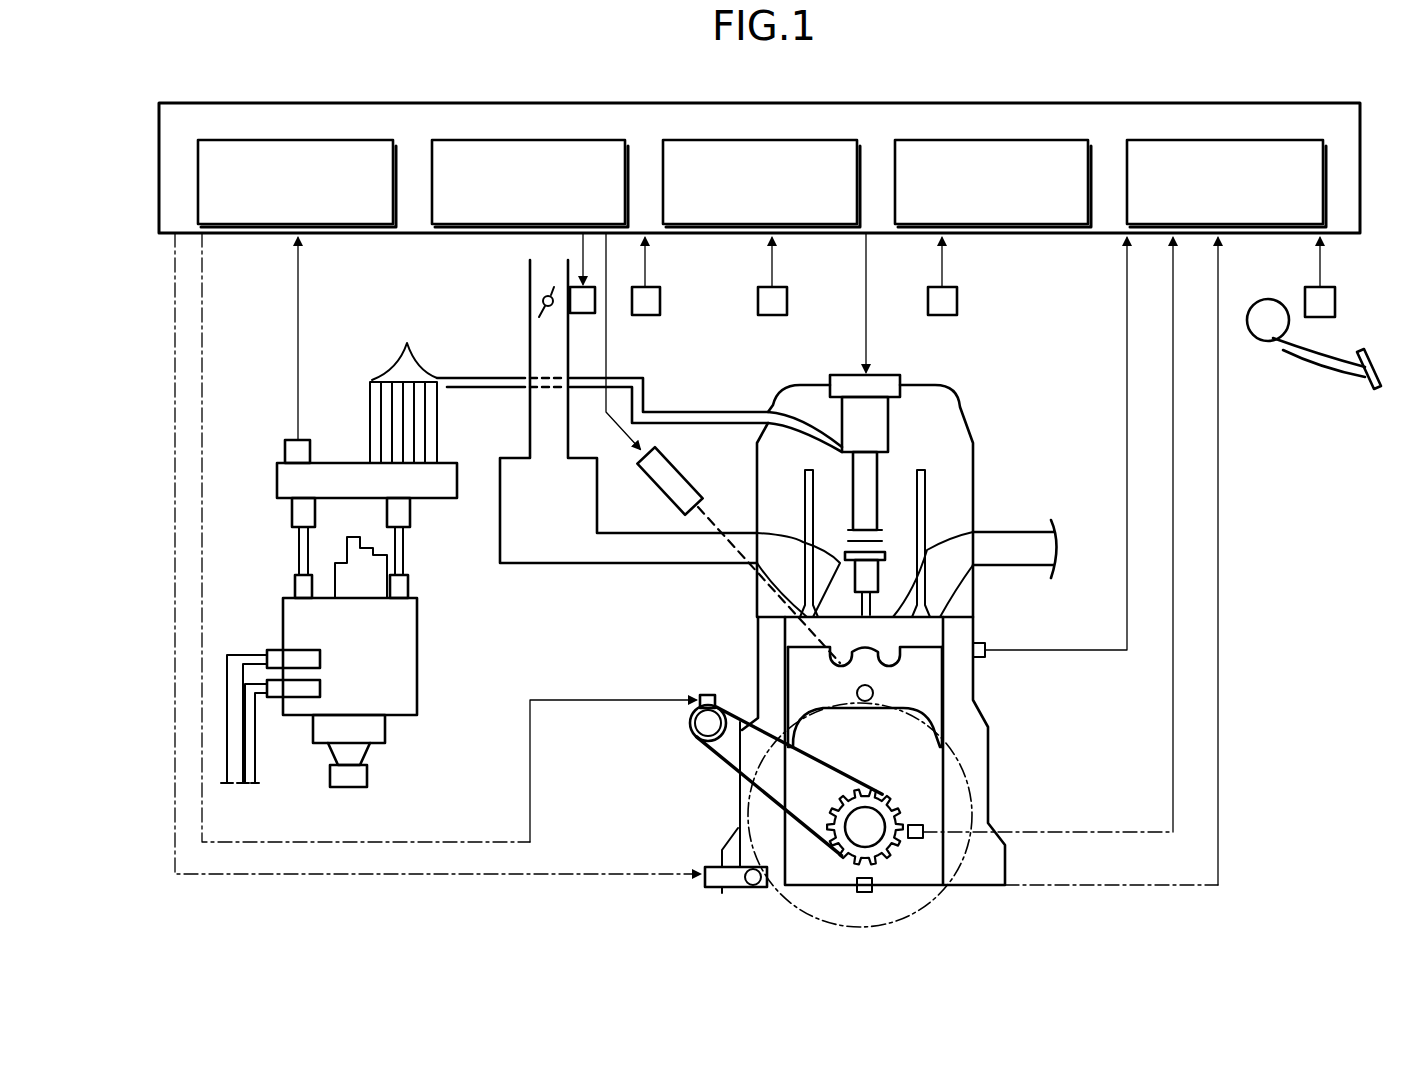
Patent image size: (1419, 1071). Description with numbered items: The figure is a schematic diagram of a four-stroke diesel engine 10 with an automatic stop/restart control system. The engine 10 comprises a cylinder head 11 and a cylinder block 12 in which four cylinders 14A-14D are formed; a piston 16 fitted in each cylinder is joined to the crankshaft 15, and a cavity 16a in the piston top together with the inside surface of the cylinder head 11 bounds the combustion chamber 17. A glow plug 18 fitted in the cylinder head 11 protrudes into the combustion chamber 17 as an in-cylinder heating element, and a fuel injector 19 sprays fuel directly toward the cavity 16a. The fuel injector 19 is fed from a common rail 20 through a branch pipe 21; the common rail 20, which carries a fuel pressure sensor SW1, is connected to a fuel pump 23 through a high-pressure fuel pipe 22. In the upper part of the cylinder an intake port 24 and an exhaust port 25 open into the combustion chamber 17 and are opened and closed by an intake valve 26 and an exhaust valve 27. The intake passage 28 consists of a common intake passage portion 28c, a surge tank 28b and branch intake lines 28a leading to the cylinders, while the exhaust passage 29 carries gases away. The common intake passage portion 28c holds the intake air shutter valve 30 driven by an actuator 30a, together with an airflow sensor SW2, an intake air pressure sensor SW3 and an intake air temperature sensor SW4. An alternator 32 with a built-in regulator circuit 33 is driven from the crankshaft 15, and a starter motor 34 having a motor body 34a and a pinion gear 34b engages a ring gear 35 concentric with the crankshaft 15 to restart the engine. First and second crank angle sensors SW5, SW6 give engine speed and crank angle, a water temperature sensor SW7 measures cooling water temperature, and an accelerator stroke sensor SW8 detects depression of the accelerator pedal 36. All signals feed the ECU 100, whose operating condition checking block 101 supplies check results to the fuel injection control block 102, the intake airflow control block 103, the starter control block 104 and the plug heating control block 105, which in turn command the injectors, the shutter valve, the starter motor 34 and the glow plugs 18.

The engine control unit (ECU) 100 is at (1022, 103).
The operating condition checking block 101 is at (299, 139).
The fuel injection control block 102 is at (531, 139).
The intake airflow control block 103 is at (758, 139).
The starter control block 104 is at (989, 139).
The plug heating control block 105 is at (1221, 139).
The engine 10 is at (866, 617).
The cylinder head 11 is at (940, 430).
The cylinder block 12 is at (967, 753).
The cylinders 14A-14D is at (960, 723).
The crankshaft 15 is at (865, 830).
The piston 16 is at (944, 697).
The cavity 16a is at (888, 658).
The combustion chamber 17 is at (797, 633).
The glow plug 18 is at (684, 466).
The fuel injector 19 is at (893, 370).
The common rail 20 is at (363, 483).
The branch pipe 21 is at (403, 388).
The high-pressure fuel pipe 22 is at (407, 563).
The fuel pump 23 is at (423, 653).
The intake port 24 is at (793, 545).
The exhaust port 25 is at (943, 550).
The intake valve 26 is at (807, 507).
The exhaust valve 27 is at (930, 493).
The intake passage 28 is at (639, 446).
The branch intake line 28a is at (677, 567).
The surge tank 28b is at (537, 567).
The common intake passage portion 28c is at (528, 432).
The exhaust passage 29 is at (1023, 520).
The intake air shutter valve (throttle valve) 30 is at (540, 300).
The actuator 30a is at (577, 316).
The alternator 32 is at (692, 720).
The regulator circuit 33 is at (700, 690).
The starter motor 34 is at (757, 800).
The motor body 34a is at (700, 865).
The pinion gear 34b is at (738, 828).
The ring gear 35 is at (973, 858).
The accelerator pedal 36 is at (1303, 365).
The fuel pressure sensor SW1 is at (285, 441).
The airflow sensor SW2 is at (660, 298).
The intake air pressure sensor SW3 is at (788, 298).
The intake air temperature sensor SW4 is at (958, 298).
The first crank angle sensor SW5 is at (858, 884).
The second crank angle sensor SW6 is at (912, 825).
The water temperature sensor SW7 is at (985, 643).
The accelerator stroke sensor SW8 is at (1335, 298).